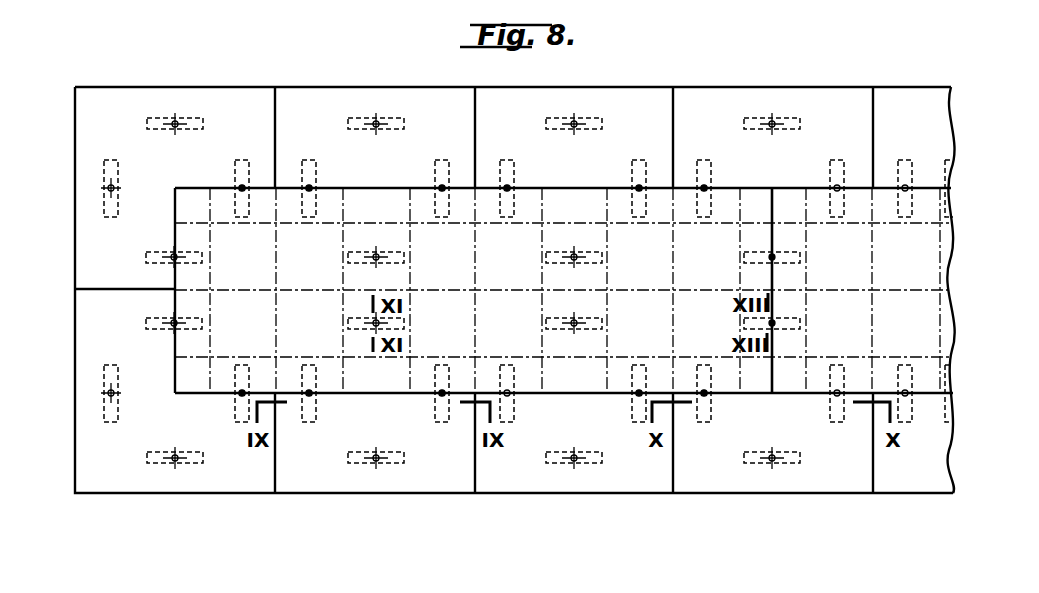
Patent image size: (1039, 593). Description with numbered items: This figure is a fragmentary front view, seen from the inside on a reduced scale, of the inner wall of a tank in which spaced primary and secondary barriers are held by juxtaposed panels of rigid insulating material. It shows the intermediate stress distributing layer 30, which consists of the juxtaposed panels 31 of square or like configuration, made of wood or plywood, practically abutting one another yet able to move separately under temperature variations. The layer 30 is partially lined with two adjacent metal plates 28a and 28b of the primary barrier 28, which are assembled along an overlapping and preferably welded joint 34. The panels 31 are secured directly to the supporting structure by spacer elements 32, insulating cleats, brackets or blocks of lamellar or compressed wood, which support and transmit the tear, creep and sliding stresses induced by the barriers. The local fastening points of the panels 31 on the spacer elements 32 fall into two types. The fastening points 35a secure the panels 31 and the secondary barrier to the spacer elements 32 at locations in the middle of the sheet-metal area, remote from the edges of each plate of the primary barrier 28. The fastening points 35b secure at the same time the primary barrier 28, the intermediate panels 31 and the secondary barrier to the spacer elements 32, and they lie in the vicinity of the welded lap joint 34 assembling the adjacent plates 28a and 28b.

The primary barrier 28 is at (903, 250).
The metal plate of the primary barrier 28a is at (913, 315).
The metal plate of the primary barrier 28b is at (575, 375).
The intermediate stress distributing layer 30 is at (716, 87).
The panels 31 is at (300, 105).
The spacer elements 32 is at (147, 125).
The welded joint 34 is at (772, 188).
The fastening points 35a is at (176, 121).
The fastening points 35b is at (175, 257).